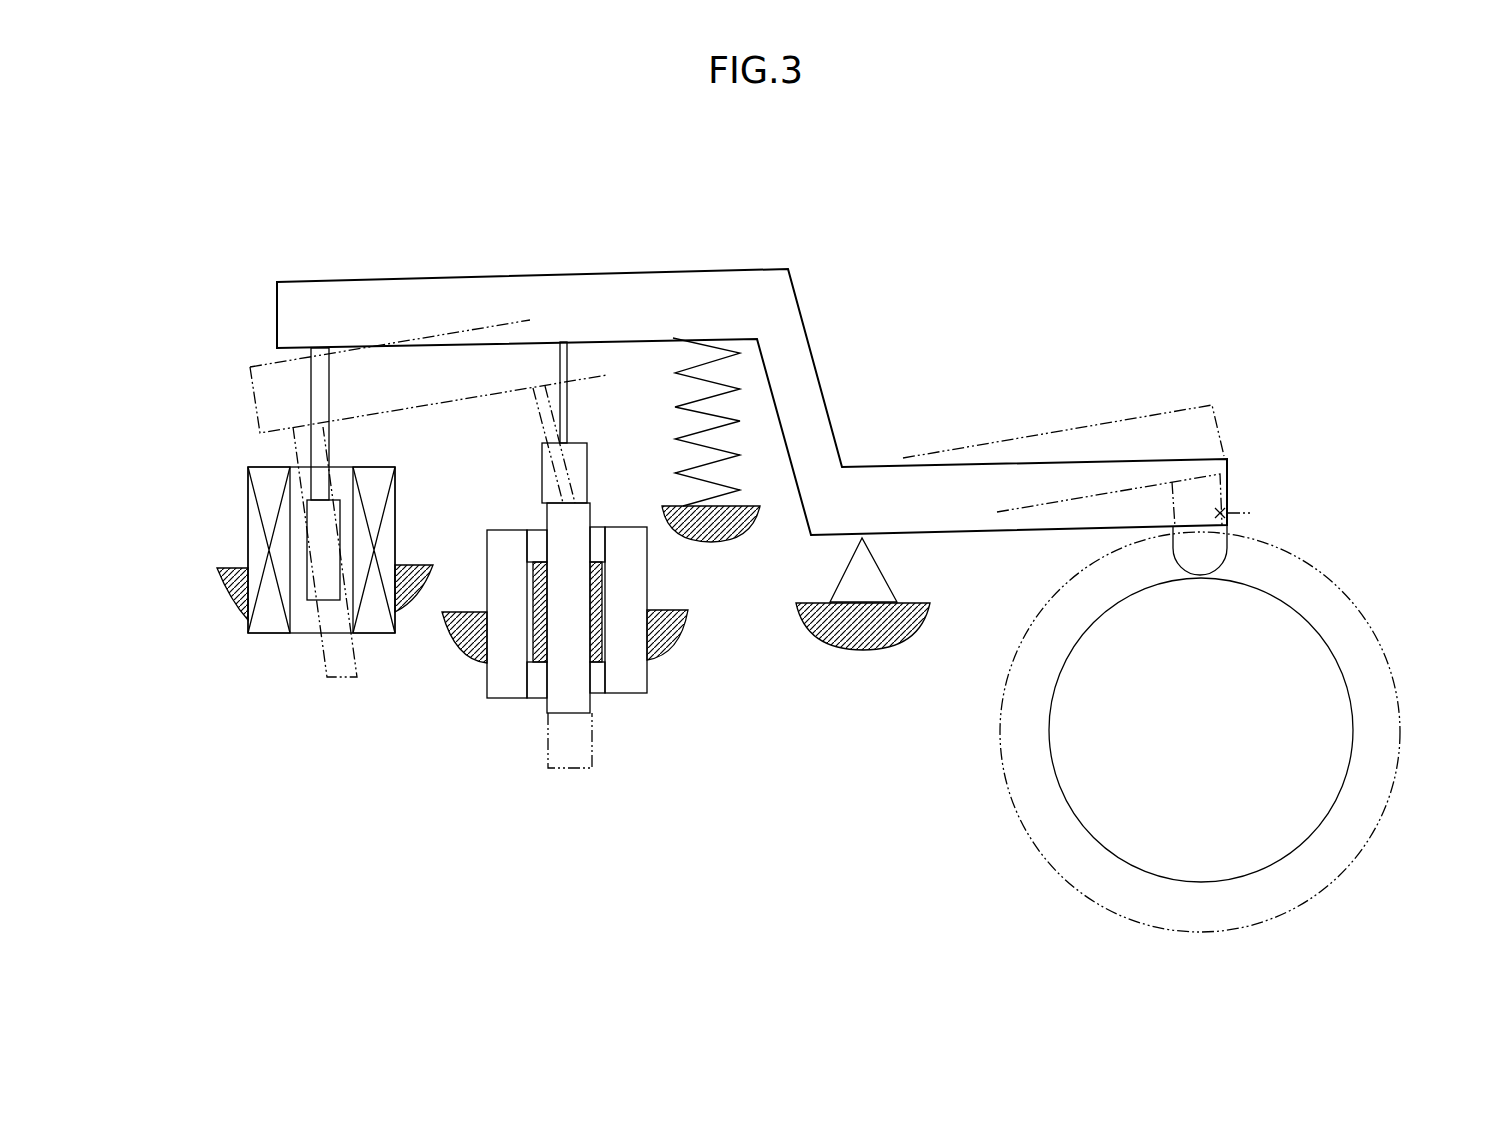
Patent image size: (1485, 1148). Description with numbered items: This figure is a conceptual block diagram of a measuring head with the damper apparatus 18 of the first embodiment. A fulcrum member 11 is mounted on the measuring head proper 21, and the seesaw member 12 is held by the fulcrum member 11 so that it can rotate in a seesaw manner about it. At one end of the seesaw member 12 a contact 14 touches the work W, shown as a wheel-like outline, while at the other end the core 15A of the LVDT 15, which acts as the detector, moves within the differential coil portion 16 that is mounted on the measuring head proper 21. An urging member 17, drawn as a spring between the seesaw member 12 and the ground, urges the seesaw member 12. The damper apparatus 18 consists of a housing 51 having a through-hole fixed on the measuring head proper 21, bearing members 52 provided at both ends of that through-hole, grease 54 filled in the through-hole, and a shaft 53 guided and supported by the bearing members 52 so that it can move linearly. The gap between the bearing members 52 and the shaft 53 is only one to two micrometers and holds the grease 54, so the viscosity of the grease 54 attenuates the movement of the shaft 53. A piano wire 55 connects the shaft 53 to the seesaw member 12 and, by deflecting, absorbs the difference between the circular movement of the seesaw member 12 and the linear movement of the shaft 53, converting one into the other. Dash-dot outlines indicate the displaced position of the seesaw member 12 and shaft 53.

The fulcrum member 11 is at (878, 583).
The seesaw member 12 is at (753, 273).
The contact 14 is at (1247, 515).
The LVDT 15 is at (275, 526).
The core 15A is at (322, 552).
The differential coil portion 16 is at (270, 618).
The urging member 17 is at (731, 413).
The damper apparatus 18 is at (554, 669).
The measuring head proper 21 is at (480, 612).
The housing 51 is at (640, 668).
The bearing members 52 is at (535, 535).
The shaft 53 is at (553, 700).
The grease 54 is at (598, 600).
The piano wire 55 is at (570, 415).
The work W is at (1331, 732).